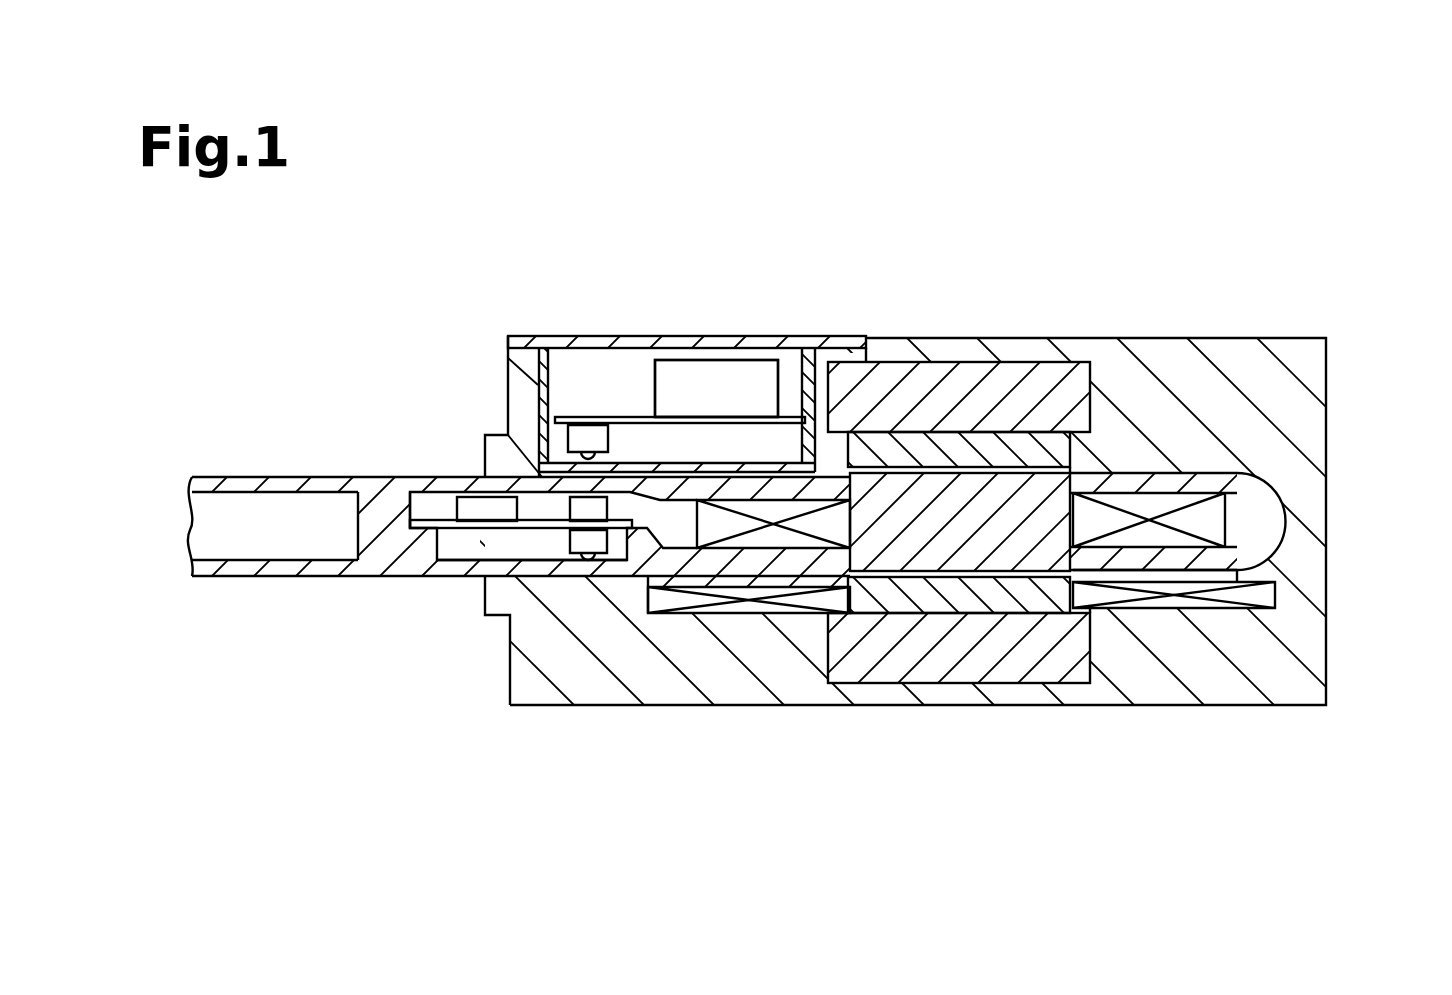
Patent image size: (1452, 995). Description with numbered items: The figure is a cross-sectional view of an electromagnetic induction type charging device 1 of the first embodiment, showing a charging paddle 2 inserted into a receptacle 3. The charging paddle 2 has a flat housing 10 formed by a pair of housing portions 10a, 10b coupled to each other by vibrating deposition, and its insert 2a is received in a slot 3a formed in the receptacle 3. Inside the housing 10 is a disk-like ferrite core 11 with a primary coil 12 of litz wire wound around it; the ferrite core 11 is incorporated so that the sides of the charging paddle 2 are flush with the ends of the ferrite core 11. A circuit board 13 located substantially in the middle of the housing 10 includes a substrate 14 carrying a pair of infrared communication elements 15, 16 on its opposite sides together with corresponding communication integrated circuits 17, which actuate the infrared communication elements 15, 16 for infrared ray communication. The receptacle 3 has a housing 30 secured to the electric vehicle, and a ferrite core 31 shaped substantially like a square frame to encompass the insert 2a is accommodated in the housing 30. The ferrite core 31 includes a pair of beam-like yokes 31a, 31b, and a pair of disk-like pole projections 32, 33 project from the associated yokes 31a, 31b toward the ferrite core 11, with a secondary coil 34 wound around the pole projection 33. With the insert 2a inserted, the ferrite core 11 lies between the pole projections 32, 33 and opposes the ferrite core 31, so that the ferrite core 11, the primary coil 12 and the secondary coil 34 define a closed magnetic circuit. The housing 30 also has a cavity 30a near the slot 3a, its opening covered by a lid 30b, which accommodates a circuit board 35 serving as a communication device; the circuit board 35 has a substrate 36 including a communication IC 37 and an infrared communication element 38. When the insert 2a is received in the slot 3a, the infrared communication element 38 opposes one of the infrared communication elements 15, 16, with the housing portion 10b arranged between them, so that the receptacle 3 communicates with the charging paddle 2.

The electromagnetic induction type charging device 1 is at (909, 302).
The charging paddle 2 is at (726, 515).
The insert 2a is at (1160, 571).
The receptacle 3 is at (740, 525).
The slot 3a is at (572, 577).
The housing 10 is at (1235, 471).
The housing portion 10a is at (370, 580).
The housing portion 10b is at (366, 487).
The ferrite core 11 is at (883, 575).
The primary coil 12 is at (788, 543).
The circuit board 13 is at (463, 548).
The substrate 14 is at (427, 517).
The infrared communication element 15 is at (567, 513).
The infrared communication element 16 is at (570, 532).
The communication integrated circuit 17 is at (450, 507).
The housing 30 is at (726, 503).
The cavity 30a is at (553, 370).
The lid 30b is at (648, 337).
The ferrite core 31 is at (956, 524).
The yoke 31a is at (970, 378).
The yoke 31b is at (948, 684).
The pole projection 32 is at (1013, 430).
The pole projection 33 is at (1003, 614).
The secondary coil 34 is at (1266, 609).
The circuit board 35 is at (754, 348).
The substrate 36 is at (625, 418).
The communication IC 37 is at (700, 406).
The infrared communication element 38 is at (608, 438).